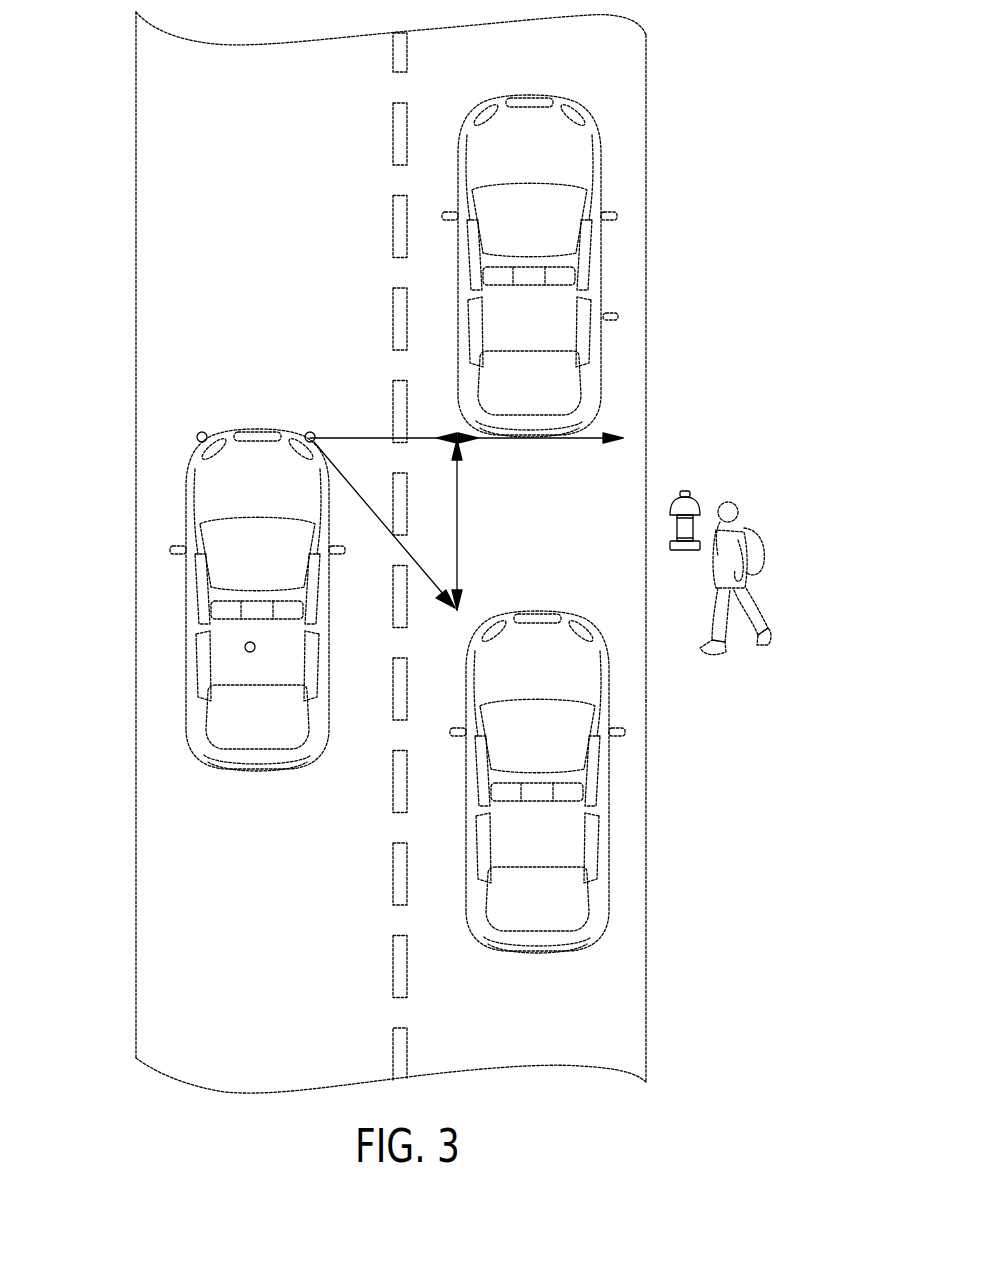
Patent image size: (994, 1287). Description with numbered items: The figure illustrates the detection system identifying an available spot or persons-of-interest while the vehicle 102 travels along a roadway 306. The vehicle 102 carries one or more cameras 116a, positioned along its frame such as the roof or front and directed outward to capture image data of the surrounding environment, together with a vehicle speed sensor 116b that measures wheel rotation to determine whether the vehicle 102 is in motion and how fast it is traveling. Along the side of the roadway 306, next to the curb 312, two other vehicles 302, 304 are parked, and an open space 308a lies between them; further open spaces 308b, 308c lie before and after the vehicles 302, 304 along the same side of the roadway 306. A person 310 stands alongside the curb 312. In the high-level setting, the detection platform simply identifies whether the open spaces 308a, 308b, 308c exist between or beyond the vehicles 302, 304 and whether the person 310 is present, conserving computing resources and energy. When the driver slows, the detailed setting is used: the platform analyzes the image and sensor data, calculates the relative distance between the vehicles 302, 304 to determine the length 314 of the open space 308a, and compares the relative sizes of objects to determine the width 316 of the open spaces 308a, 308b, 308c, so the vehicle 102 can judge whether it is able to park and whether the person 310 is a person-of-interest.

The vehicle 102 is at (202, 758).
The cameras 116a is at (203, 432).
The vehicle speed sensor 116b is at (245, 647).
The vehicle 302 is at (603, 252).
The vehicle 304 is at (606, 905).
The roadway 306 is at (648, 815).
The open space 308a is at (628, 490).
The open space 308b is at (634, 73).
The open space 308c is at (628, 987).
The person 310 is at (745, 528).
The curb 312 is at (647, 637).
The length 314 is at (457, 563).
The width 316 is at (583, 440).